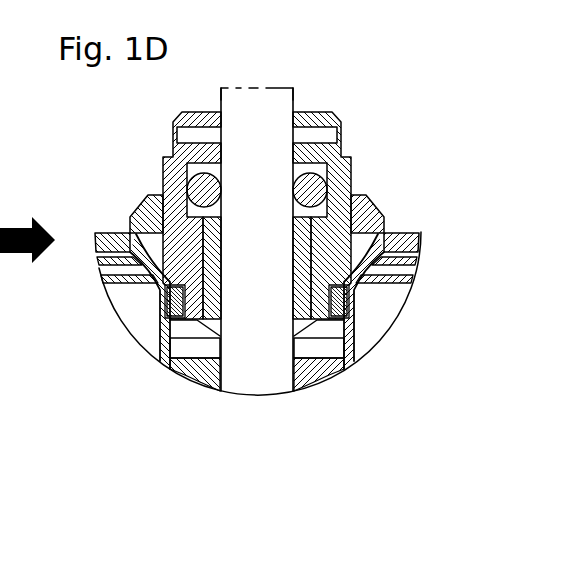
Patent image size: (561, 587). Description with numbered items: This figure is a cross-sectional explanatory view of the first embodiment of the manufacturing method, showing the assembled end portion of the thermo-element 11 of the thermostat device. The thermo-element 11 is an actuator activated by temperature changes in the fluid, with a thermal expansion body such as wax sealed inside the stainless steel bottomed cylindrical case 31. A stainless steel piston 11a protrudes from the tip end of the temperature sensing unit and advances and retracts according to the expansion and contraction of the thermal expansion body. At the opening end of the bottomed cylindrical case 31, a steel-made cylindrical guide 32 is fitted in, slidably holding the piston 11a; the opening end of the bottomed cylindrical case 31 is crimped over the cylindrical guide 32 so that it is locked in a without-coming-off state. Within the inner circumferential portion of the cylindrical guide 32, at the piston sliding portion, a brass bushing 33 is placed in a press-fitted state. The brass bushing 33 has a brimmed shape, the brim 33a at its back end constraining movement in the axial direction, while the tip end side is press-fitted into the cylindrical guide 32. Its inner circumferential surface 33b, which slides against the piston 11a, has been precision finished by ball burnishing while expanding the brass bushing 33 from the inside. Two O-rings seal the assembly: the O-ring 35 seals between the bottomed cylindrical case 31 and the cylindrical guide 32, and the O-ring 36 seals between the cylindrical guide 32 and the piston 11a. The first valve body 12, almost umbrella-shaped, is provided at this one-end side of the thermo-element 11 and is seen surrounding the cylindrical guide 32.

The thermo-element 11 is at (370, 344).
The piston 11a is at (270, 100).
The first valve body 12 is at (422, 234).
The bottomed cylindrical case 31 is at (160, 355).
The cylindrical guide 32 is at (337, 178).
The brass bushing 33 is at (268, 362).
The brim 33a is at (336, 362).
The inner circumferential surface 33b is at (207, 373).
The O-ring 35 is at (158, 355).
The O-ring 36 is at (200, 189).